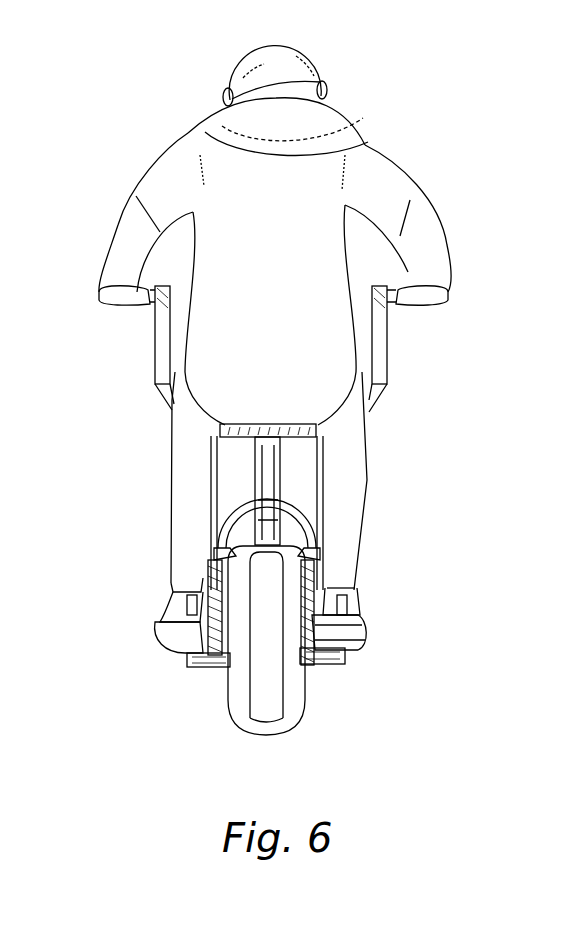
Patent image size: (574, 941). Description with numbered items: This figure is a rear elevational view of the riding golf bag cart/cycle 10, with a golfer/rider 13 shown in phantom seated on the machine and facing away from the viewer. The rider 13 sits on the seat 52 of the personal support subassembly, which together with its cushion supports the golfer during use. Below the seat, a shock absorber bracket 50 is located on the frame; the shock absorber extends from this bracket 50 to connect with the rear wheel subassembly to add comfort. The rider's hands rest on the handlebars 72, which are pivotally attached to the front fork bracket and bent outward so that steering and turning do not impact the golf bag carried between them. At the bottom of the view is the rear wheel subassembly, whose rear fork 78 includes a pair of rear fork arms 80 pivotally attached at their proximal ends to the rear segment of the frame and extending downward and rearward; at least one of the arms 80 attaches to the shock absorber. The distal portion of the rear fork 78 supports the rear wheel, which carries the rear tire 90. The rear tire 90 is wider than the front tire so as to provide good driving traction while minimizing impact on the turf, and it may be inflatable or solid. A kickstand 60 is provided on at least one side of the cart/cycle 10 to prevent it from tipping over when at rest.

The rideable cart 10 is at (234, 510).
The golfer/rider 13 is at (350, 89).
The shock absorber bracket 50 is at (292, 470).
The seat 52 is at (250, 438).
The kickstand 60 is at (170, 647).
The handlebars 72 is at (378, 362).
The rear fork 78 is at (330, 582).
The rear fork arms 80 is at (350, 630).
The rear tire 90 is at (278, 700).